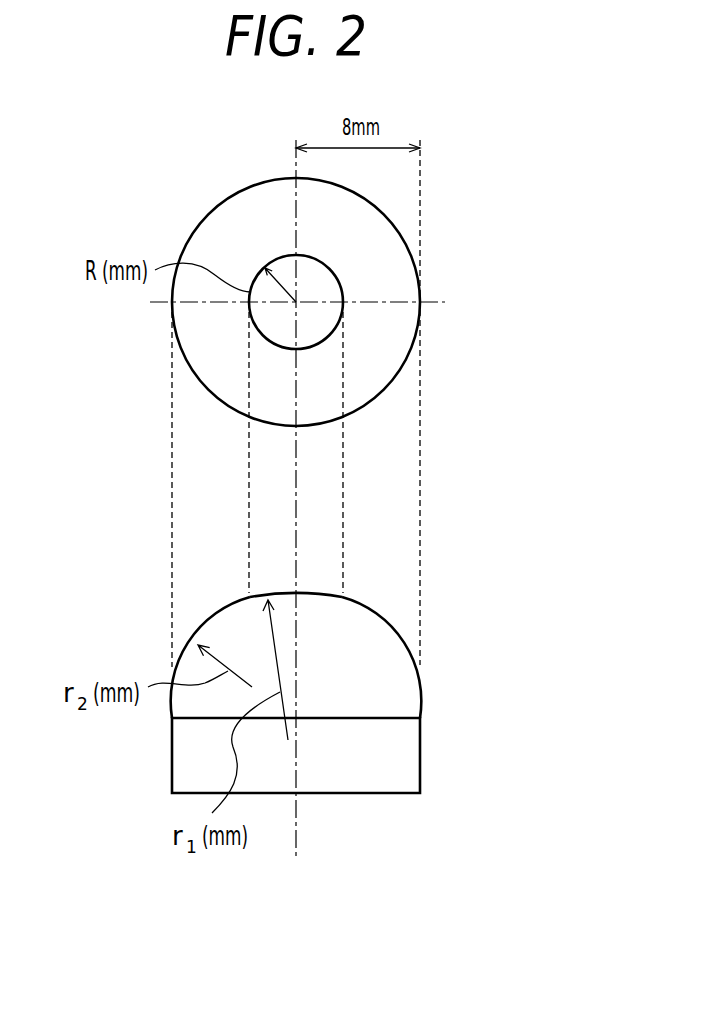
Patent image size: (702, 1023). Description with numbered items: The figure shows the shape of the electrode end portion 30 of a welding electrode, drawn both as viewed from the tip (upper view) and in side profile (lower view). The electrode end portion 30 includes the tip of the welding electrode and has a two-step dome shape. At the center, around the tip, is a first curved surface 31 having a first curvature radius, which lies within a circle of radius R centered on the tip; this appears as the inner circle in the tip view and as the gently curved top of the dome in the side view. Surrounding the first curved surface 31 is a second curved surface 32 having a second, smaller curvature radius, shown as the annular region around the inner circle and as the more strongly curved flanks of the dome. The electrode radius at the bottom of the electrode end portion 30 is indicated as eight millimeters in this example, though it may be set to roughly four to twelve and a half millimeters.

The electrode end portion 30 is at (410, 243).
The first curved surface 31 is at (327, 292).
The second curved surface 32 is at (377, 334).